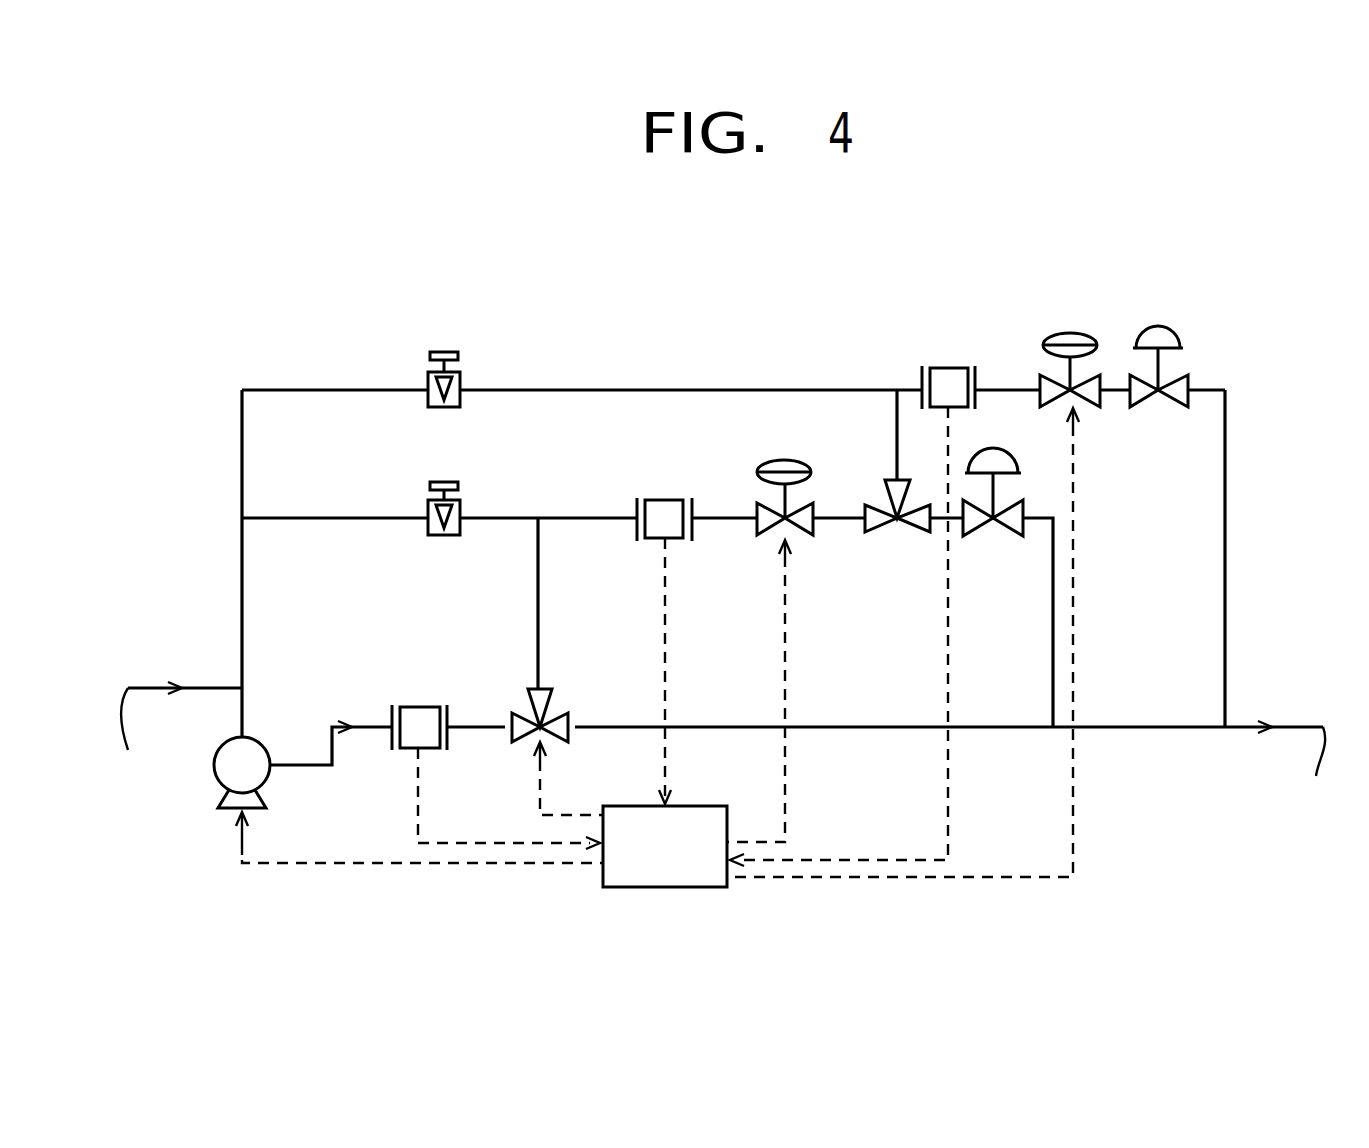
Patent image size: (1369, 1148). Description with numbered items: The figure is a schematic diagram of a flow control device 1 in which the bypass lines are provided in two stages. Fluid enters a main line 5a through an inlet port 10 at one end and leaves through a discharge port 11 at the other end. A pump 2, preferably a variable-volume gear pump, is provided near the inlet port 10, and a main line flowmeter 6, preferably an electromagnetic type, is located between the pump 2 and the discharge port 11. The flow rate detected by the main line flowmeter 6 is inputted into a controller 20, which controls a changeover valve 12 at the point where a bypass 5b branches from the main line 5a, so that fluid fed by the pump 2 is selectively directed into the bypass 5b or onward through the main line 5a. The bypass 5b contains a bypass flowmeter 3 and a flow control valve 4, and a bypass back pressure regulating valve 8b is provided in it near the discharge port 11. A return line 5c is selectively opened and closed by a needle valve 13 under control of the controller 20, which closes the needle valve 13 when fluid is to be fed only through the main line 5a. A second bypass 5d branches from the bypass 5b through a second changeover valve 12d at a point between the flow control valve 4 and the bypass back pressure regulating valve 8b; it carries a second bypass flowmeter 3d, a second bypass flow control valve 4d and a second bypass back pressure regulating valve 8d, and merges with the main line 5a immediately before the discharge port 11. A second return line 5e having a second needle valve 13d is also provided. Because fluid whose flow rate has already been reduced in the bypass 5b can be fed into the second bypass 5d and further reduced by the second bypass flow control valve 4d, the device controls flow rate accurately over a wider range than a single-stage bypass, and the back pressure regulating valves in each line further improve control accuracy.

The flow control device 1 is at (390, 476).
The pump 2 is at (222, 780).
The bypass flowmeter 3 is at (665, 500).
The second bypass flowmeter 3d is at (955, 368).
The flow control valve 4 is at (818, 505).
The second bypass flow control valve 4d is at (1085, 335).
The main line 5a is at (210, 688).
The bypass 5b is at (556, 525).
The return line 5c is at (285, 518).
The second bypass 5d is at (897, 420).
The second return line 5e is at (615, 390).
The main line flowmeter 6 is at (412, 707).
The bypass back pressure regulating valve 8b is at (1020, 526).
The second bypass back pressure regulating valve 8d is at (1190, 385).
The inlet port 10 is at (140, 754).
The discharge port 11 is at (1320, 781).
The changeover valve 12 is at (518, 712).
The second changeover valve 12d is at (878, 527).
The needle valve 13 is at (462, 512).
The second needle valve 13d is at (448, 350).
The controller 20 is at (700, 884).